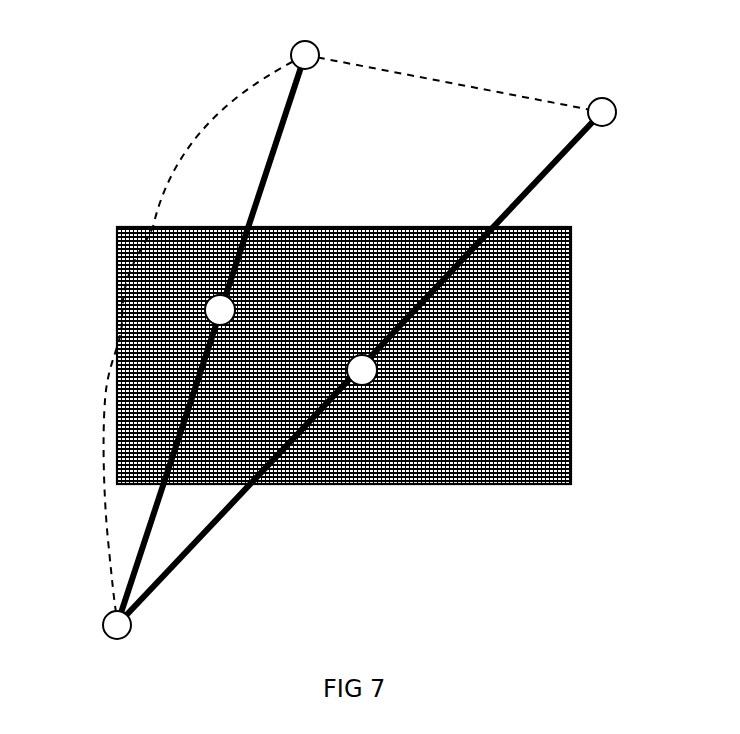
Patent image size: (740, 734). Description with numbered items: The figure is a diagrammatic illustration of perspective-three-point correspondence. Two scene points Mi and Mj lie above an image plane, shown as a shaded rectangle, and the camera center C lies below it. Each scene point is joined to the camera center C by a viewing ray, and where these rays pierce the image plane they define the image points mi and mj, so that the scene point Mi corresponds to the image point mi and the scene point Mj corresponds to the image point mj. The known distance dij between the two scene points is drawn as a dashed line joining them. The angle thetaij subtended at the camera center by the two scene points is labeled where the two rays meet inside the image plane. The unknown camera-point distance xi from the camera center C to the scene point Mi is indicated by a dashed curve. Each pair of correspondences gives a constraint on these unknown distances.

The scene point M_i Mi is at (259, 39).
The scene point M_j Mj is at (637, 122).
The distance d_ij dij is at (453, 69).
The image point m_i mi is at (198, 287).
The image point m_j mj is at (390, 381).
The angle theta_ij thetaij is at (257, 390).
The camera-point distance x_i xi is at (159, 337).
The camera center C is at (138, 634).